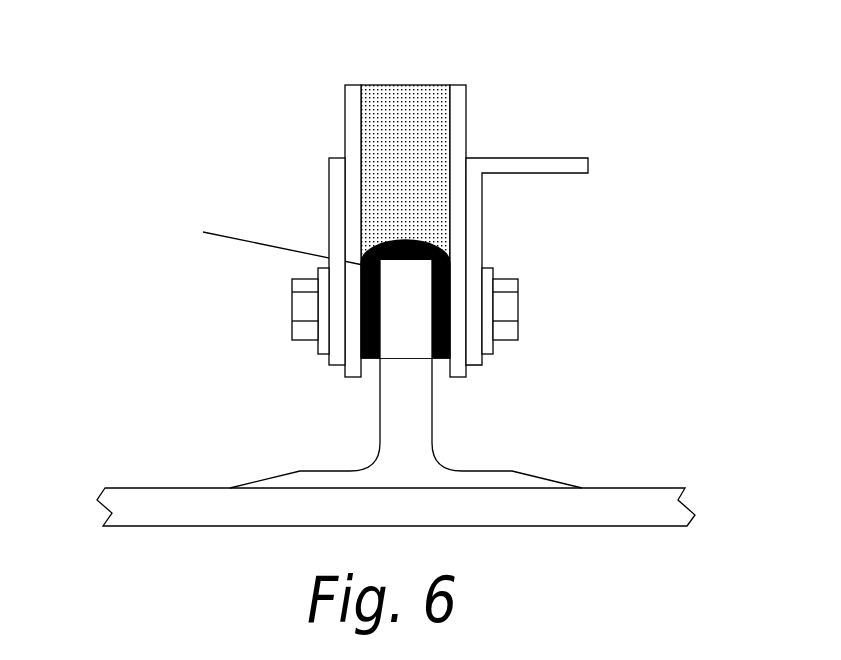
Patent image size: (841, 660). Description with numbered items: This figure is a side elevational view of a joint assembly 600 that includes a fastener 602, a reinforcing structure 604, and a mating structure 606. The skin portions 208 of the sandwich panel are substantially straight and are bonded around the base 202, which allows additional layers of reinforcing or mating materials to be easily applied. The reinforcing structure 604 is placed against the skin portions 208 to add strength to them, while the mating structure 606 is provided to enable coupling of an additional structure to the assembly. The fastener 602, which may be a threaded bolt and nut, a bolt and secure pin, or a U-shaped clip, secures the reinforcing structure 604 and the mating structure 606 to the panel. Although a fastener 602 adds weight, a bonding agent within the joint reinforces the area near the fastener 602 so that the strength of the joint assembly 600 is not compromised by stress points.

The joint assembly 600 is at (125, 32).
The skin portions 208 is at (345, 117).
The reinforcing structure 604 is at (330, 180).
The mating structure 606 is at (532, 158).
The fastener 602 is at (518, 290).
The structure 202 is at (465, 470).